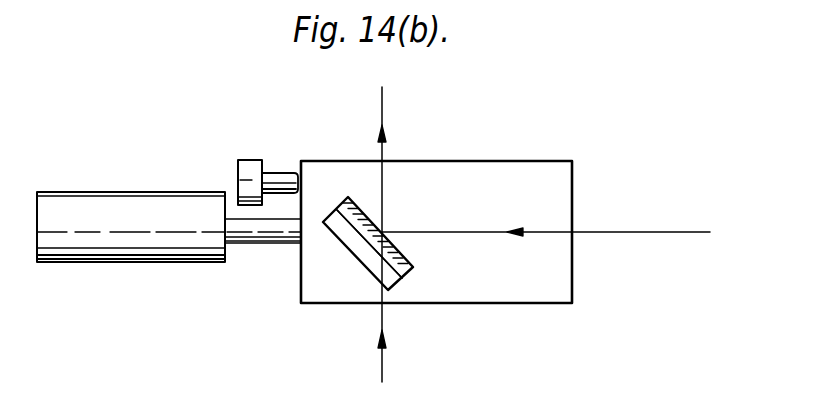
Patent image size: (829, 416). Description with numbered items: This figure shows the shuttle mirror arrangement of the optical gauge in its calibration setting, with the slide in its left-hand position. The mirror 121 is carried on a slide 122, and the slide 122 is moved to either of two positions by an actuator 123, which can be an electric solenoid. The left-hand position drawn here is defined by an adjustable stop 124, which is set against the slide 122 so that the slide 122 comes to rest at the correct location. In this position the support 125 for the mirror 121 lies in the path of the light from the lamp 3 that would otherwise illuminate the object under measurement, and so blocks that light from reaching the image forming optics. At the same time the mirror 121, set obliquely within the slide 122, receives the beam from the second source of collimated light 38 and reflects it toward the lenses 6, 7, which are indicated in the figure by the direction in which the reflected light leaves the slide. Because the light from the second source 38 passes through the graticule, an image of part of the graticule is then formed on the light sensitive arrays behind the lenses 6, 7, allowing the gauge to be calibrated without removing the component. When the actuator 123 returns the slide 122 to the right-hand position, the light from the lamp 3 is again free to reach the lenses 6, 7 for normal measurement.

The shuttle mirror 121 is at (410, 270).
The slide 122 is at (545, 291).
The actuator 123 is at (120, 208).
The adjustable stop 124 is at (280, 177).
The support 125 is at (363, 250).
The second source of collimated light 38 is at (697, 233).
The lens 6 is at (422, 118).
The lens 7 is at (382, 93).
The source 3 is at (382, 372).